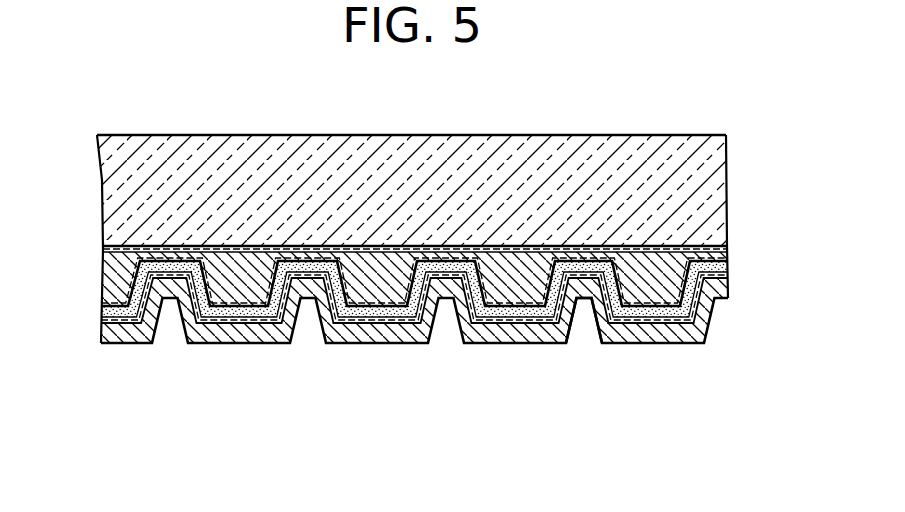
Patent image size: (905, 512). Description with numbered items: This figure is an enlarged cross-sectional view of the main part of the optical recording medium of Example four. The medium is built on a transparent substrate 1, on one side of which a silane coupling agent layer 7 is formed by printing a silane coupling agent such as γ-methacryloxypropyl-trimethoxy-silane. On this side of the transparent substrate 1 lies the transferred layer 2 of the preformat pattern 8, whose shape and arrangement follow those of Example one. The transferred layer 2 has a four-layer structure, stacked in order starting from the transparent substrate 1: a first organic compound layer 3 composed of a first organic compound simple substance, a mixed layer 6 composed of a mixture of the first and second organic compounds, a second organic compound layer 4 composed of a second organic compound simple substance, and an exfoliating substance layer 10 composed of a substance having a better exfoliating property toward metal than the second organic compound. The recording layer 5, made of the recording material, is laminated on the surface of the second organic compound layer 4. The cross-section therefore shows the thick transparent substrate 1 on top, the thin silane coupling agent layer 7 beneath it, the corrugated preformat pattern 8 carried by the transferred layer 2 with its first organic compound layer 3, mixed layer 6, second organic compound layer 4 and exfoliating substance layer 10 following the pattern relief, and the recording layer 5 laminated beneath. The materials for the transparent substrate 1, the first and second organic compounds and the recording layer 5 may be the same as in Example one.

The transparent substrate 1 is at (655, 157).
The transferred layer 2 is at (788, 223).
The first organic compound layer 3 is at (727, 253).
The second organic compound layer 4 is at (728, 268).
The recording layer 5 is at (535, 332).
The mixed layer 6 is at (728, 263).
The silane coupling agent layer 7 is at (149, 245).
The preformat pattern 8 is at (527, 280).
The exfoliating substance layer 10 is at (728, 278).